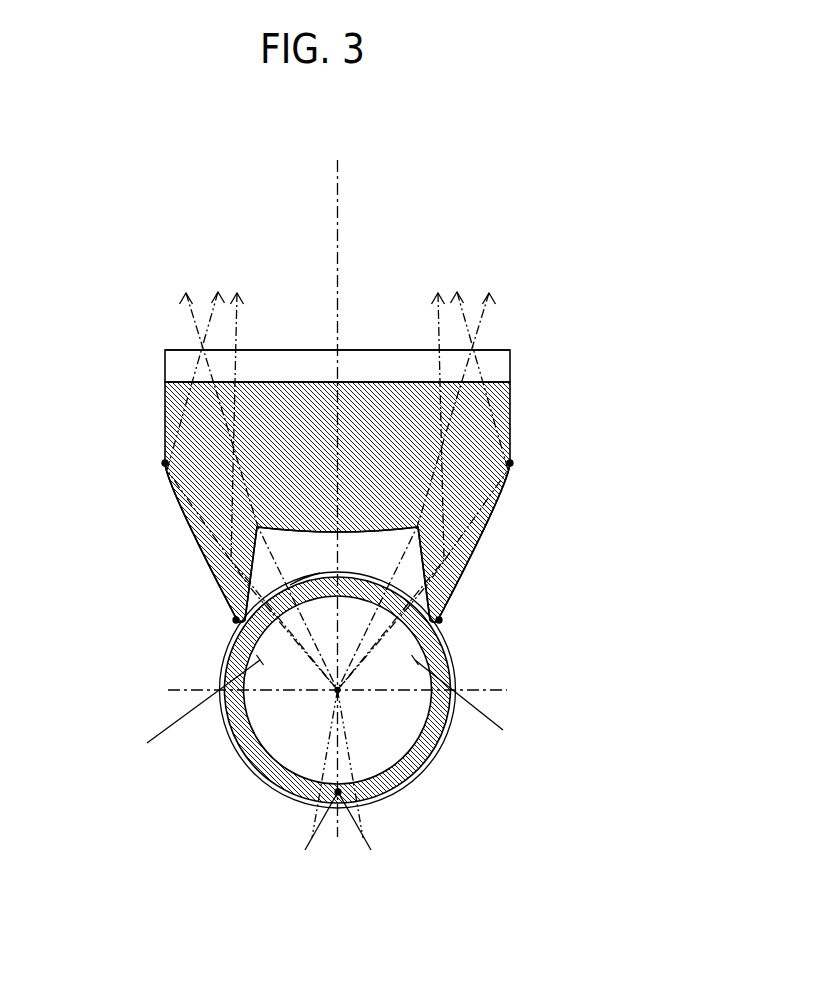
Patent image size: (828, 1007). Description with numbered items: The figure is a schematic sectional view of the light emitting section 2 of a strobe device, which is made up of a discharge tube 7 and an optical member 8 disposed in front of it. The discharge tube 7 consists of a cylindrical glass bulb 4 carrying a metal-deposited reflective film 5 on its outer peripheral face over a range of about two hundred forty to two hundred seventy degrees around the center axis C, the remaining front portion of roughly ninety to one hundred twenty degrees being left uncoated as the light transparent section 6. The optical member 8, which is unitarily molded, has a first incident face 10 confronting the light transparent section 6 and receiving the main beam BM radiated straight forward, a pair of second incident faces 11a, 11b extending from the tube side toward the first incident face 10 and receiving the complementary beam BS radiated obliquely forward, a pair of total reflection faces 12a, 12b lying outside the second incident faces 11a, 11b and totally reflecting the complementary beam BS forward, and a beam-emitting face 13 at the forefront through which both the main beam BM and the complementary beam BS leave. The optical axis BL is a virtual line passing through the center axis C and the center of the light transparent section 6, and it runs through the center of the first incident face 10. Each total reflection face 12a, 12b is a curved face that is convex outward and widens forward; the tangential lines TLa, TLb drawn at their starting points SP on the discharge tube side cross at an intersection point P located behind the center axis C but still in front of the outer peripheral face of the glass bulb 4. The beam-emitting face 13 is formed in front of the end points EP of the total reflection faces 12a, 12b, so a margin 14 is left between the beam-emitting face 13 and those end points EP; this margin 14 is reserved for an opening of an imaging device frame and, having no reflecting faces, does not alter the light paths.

The light emitting section 2 is at (572, 478).
The glass bulb 4 is at (273, 780).
The reflective film 5 is at (243, 763).
The light transparent section 6 is at (303, 582).
The discharge tube 7 is at (500, 702).
The optical member 8 is at (533, 380).
The first incident face 10 is at (380, 528).
The second incident face 11a is at (458, 590).
The second incident face 11b is at (232, 597).
The total reflection face 12a is at (498, 505).
The total reflection face 12b is at (175, 517).
The beam-emitting face 13 is at (368, 347).
The margin 14 is at (500, 420).
The optical axis BL is at (339, 207).
The complementary beam BS is at (206, 330).
The main beam BM is at (335, 342).
The end point EP is at (165, 463).
The starting point SP is at (235, 622).
The tangential line TLa is at (484, 700).
The tangential line TLb is at (179, 706).
The center axis C is at (339, 692).
The intersection point P is at (340, 793).